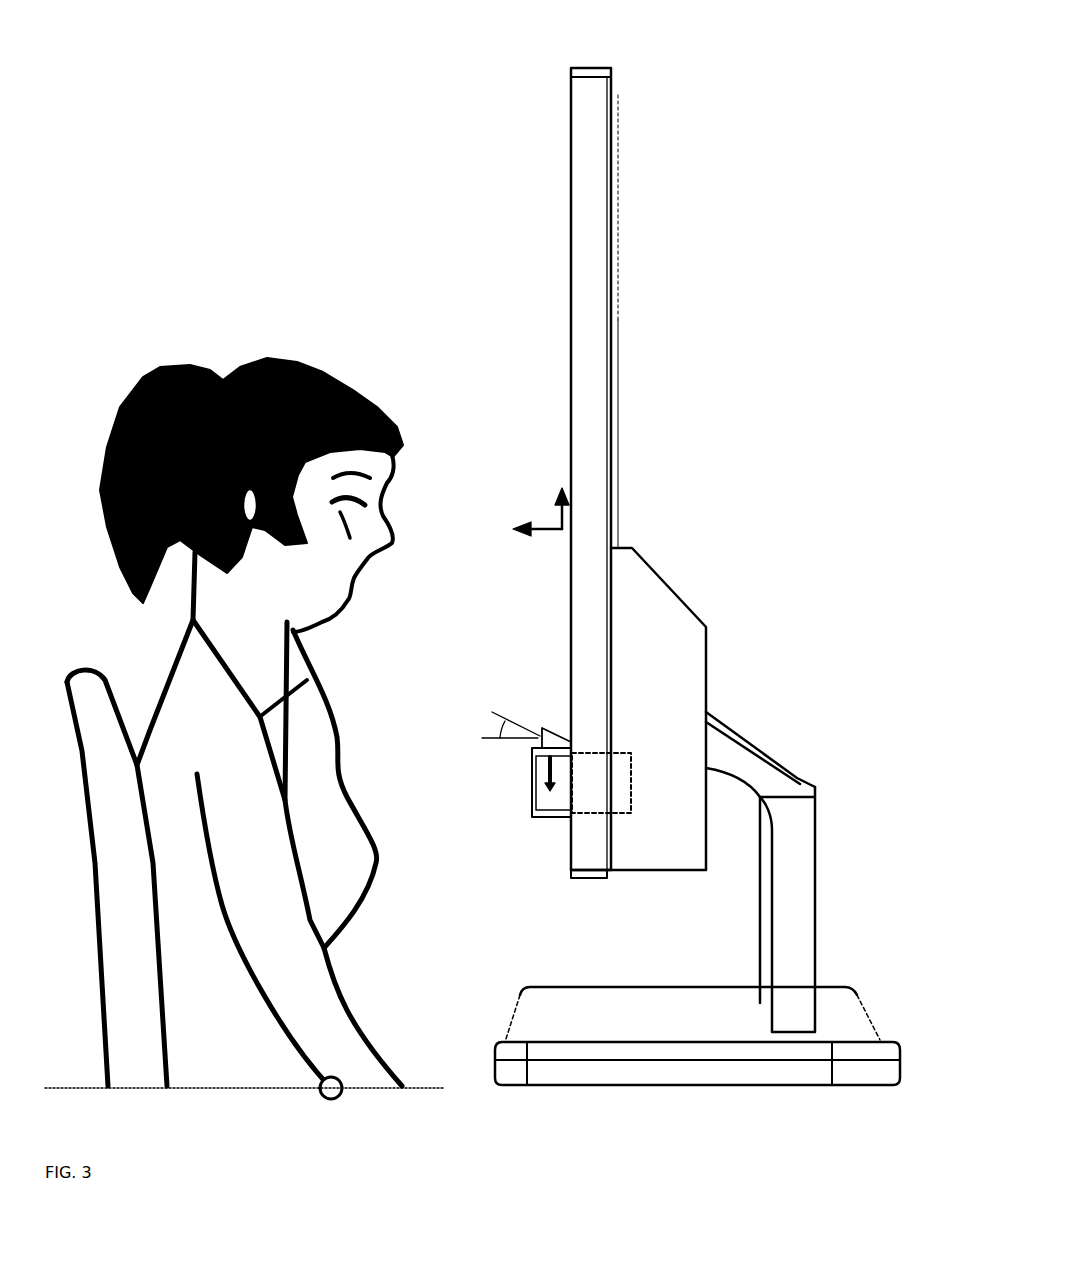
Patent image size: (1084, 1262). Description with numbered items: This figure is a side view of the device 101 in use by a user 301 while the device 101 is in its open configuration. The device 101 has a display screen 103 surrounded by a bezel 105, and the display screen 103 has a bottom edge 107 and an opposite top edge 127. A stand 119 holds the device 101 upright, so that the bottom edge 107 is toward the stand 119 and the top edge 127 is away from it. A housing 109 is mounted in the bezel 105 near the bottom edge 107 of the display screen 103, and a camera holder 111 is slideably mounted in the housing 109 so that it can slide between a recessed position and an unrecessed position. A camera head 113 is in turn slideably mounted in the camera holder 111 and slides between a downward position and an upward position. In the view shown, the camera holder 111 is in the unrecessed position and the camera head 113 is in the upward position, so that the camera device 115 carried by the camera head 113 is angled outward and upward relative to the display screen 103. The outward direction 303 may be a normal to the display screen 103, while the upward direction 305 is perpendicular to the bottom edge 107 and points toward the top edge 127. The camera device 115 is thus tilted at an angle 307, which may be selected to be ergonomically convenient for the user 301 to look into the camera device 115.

The device 101 is at (680, 106).
The display screen 103 is at (560, 268).
The bezel 105 is at (590, 862).
The bottom edge 107 is at (570, 670).
The housing 109 is at (613, 813).
The camera holder 111 is at (552, 813).
The camera head 113 is at (570, 742).
The camera device 115 is at (532, 746).
The stand 119 is at (850, 1075).
The top edge 127 is at (571, 78).
The user 301 is at (138, 616).
The outward direction 303 is at (513, 530).
The upward direction 305 is at (562, 488).
The angle 307 is at (480, 728).